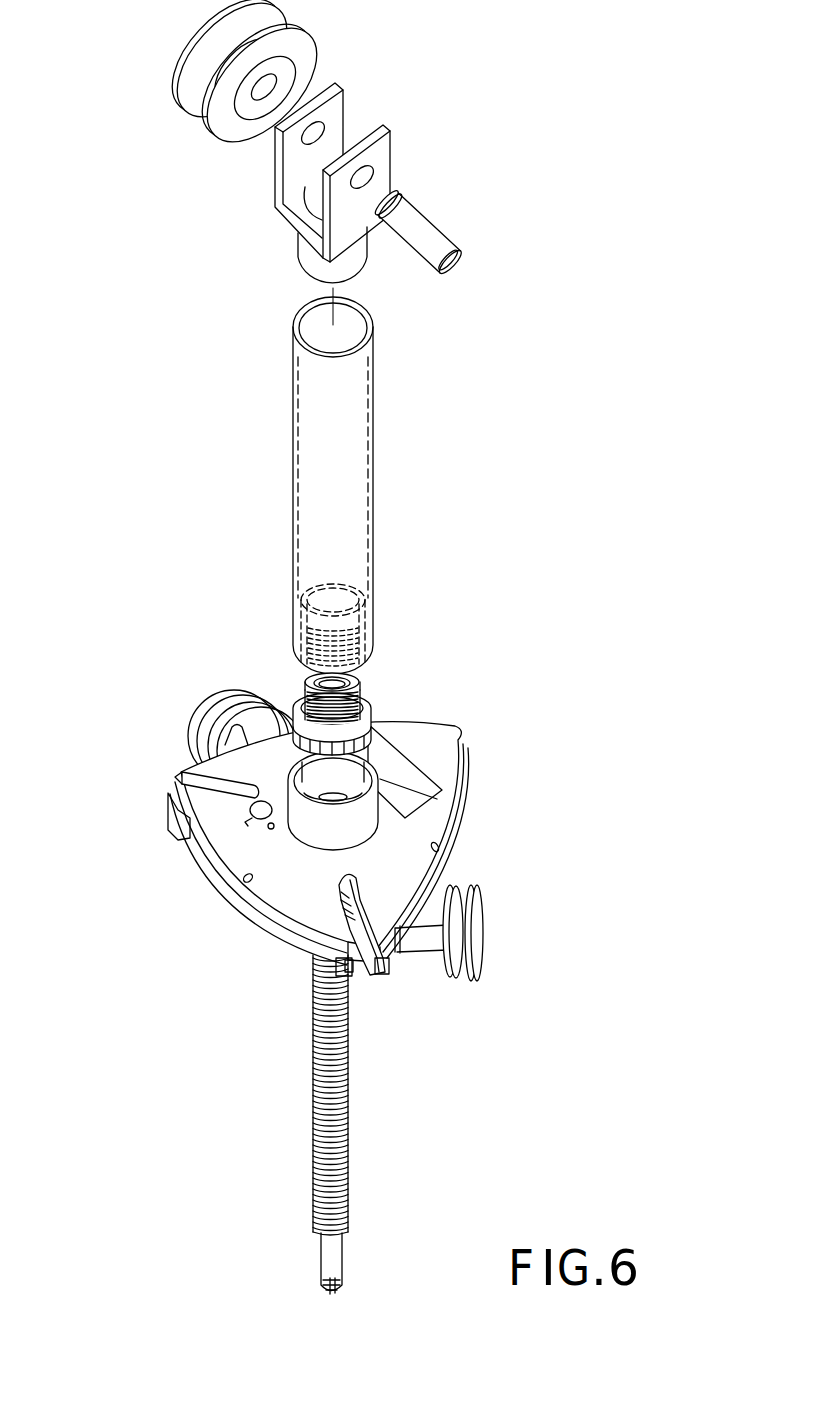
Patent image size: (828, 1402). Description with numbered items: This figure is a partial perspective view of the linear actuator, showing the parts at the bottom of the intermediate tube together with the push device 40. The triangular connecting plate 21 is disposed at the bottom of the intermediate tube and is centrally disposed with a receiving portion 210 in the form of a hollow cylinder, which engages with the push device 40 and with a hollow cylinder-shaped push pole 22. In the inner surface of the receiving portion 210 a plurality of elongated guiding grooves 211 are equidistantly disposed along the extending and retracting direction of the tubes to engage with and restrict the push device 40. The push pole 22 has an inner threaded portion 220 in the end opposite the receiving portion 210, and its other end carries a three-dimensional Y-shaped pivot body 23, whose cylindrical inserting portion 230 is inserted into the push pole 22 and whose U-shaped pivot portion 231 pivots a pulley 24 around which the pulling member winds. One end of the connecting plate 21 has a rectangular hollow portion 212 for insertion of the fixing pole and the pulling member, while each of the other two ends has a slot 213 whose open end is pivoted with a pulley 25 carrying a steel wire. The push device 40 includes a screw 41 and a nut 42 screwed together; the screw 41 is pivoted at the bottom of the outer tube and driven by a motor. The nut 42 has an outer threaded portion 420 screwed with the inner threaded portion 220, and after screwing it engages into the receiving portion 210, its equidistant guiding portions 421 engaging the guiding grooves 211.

The connecting plate 21 is at (332, 813).
The receiving portion 210 is at (305, 765).
The guiding grooves 211 is at (376, 745).
The rectangular hollow portion 212 is at (427, 783).
The slot 213 is at (207, 777).
The push pole 22 is at (358, 485).
The inner threaded portion 220 is at (372, 607).
The pivot body 23 is at (337, 182).
The inserting portion 230 is at (357, 258).
The pivot portion 231 is at (287, 163).
The pulley 24 is at (190, 75).
The pulley 25 is at (465, 918).
The push device 40 is at (384, 1124).
The screw 41 is at (348, 1170).
The nut 42 is at (383, 673).
The outer threaded portion 420 is at (360, 680).
The guiding portions 421 is at (365, 712).